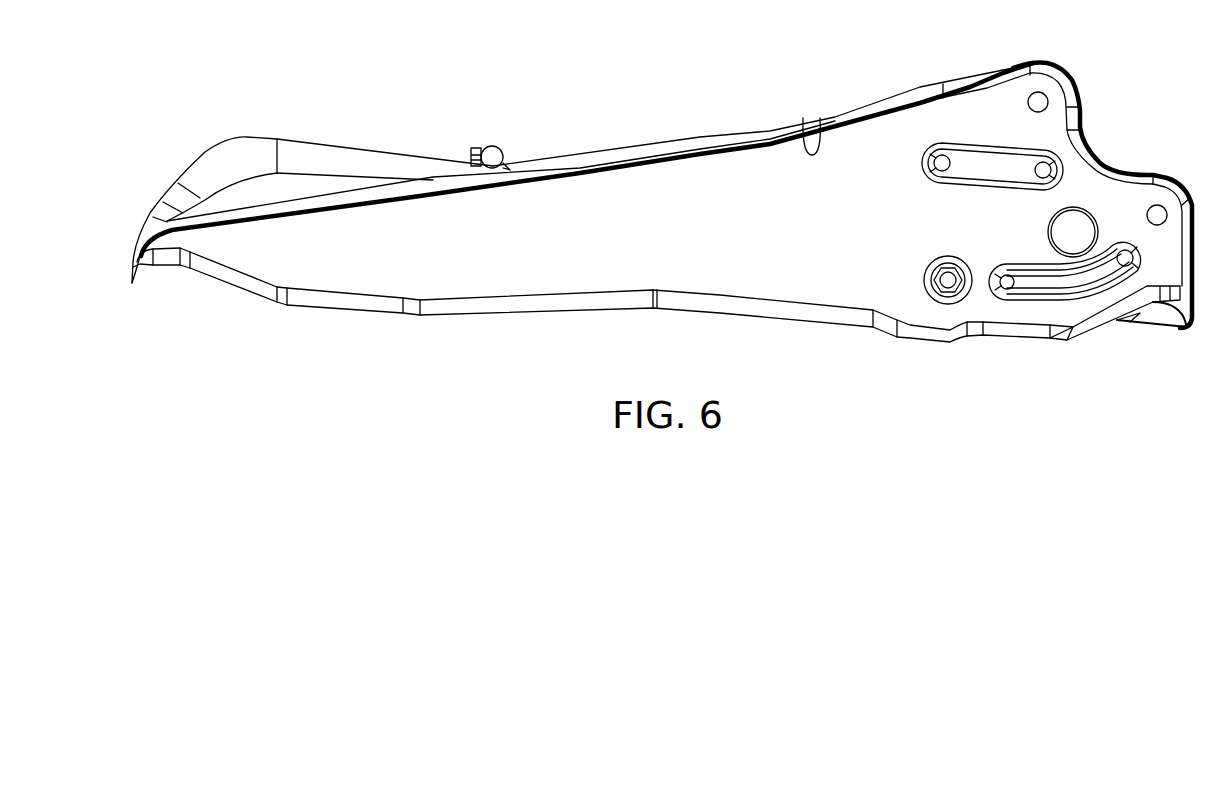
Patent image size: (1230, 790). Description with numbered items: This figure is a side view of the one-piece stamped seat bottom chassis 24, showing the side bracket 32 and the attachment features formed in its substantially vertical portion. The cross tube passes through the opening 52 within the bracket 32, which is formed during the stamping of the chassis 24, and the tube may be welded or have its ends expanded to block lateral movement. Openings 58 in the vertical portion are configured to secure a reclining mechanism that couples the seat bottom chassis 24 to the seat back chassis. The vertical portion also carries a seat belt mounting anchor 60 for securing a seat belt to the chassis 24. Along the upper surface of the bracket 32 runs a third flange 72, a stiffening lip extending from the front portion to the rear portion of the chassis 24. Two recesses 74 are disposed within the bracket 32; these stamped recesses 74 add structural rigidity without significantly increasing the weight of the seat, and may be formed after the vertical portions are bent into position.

The seat bottom chassis 24 is at (572, 125).
The bracket 32 is at (664, 197).
The openings 52 is at (1085, 228).
The openings 58 is at (1042, 100).
The seat belt mounting anchor 60 is at (950, 300).
The third flange 72 is at (820, 118).
The recesses 74 is at (982, 160).